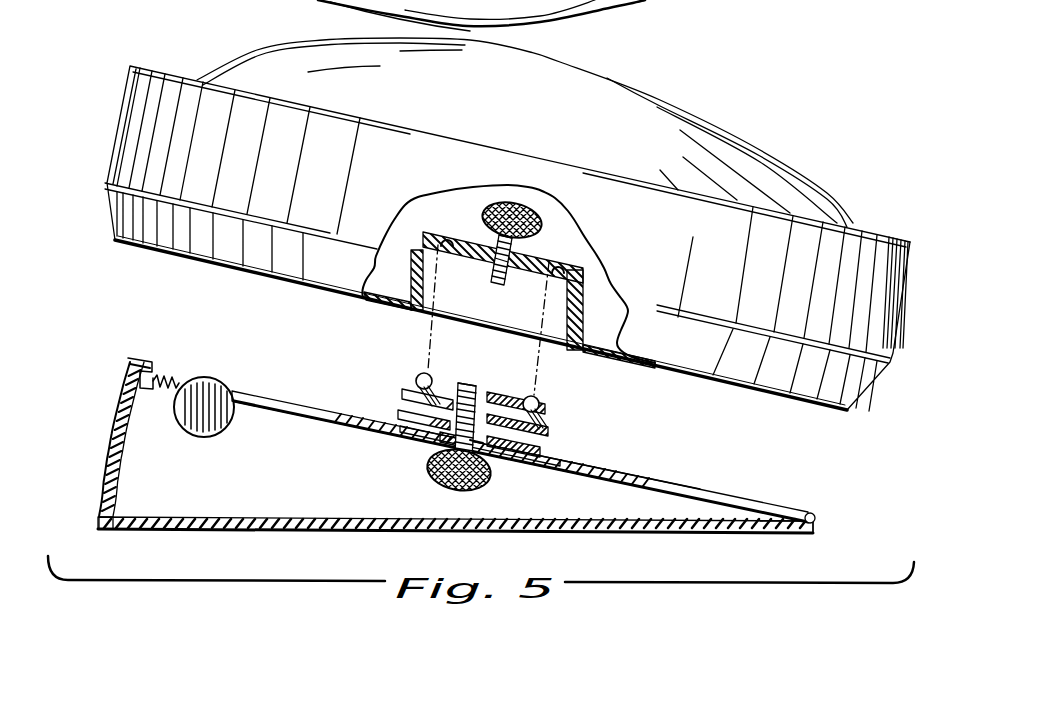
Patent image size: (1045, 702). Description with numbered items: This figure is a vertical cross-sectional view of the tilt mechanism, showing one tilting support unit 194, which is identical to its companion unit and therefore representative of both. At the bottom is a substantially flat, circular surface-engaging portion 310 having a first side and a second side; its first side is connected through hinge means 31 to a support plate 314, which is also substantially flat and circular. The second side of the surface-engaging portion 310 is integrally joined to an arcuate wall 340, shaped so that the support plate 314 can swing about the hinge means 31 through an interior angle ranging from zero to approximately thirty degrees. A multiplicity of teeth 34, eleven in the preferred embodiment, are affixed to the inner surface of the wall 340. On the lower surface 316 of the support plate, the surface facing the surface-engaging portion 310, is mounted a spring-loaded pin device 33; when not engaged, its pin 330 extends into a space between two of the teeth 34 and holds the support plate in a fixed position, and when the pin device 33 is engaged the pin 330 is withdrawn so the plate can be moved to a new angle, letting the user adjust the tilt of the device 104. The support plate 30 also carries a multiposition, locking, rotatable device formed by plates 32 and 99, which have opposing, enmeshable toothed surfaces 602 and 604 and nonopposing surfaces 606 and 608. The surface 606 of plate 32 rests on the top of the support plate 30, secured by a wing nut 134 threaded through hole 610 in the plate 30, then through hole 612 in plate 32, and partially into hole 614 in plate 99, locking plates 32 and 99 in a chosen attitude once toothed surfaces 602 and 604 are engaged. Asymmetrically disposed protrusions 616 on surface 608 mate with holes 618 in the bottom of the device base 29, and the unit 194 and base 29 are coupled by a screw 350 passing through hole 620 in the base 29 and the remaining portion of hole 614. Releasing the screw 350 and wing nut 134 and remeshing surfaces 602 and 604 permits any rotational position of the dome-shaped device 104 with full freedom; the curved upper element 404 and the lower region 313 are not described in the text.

The device 104 is at (217, 48).
The dome 404 is at (775, 135).
The device base 29 is at (866, 256).
The holes 618 is at (452, 212).
The hole 620 is at (480, 275).
The screw 350 is at (497, 283).
The protrusions 616 is at (422, 374).
The hole 614 is at (472, 386).
The plate 99 is at (400, 392).
The plate 32 is at (398, 415).
The nonopposing surface 608 is at (540, 407).
The toothed surface 604 is at (545, 418).
The toothed surface 602 is at (530, 440).
The nonopposing surface 606 is at (510, 452).
The hole 612 is at (493, 445).
The hole 610 is at (445, 440).
The wing nut 134 is at (432, 480).
The pin 330 is at (148, 366).
The spring-loaded pin device 33 is at (190, 380).
The support plate 30 is at (236, 383).
The support plate 314 is at (297, 396).
The lower surface 316 is at (273, 405).
The teeth 34 is at (97, 463).
The arcuate wall 340 is at (99, 522).
The surface-engaging portion 310 is at (273, 531).
The base end 313 is at (734, 516).
The hinge means 31 is at (818, 512).
The tilting support unit 194 is at (711, 451).